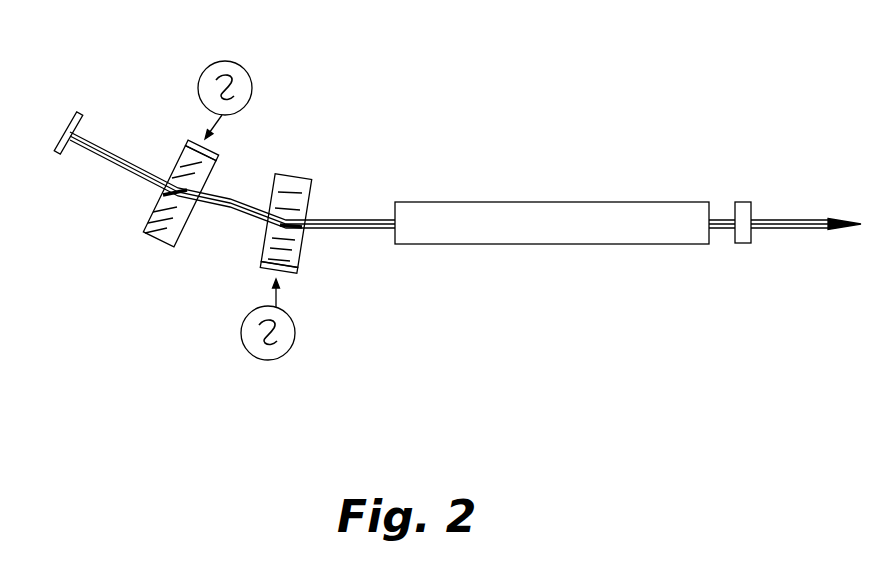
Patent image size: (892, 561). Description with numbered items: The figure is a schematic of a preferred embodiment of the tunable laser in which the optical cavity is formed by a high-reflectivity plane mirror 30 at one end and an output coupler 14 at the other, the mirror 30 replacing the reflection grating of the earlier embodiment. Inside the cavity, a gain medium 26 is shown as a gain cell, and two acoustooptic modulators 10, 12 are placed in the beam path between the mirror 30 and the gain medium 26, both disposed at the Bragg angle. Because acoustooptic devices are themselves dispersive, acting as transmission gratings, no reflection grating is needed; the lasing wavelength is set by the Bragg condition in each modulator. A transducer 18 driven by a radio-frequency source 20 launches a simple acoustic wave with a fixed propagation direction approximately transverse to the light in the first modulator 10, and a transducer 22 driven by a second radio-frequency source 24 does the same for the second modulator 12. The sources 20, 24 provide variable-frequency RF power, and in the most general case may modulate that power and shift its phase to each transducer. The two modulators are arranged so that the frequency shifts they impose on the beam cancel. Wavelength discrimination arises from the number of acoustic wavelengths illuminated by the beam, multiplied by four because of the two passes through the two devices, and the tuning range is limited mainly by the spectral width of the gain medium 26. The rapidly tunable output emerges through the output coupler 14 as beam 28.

The acoustooptic modulator 10 is at (313, 208).
The acoustooptic modulator 12 is at (171, 150).
The output coupler 14 is at (734, 240).
The transducer 18 is at (265, 281).
The RF generator 20 is at (293, 350).
The transducer 22 is at (218, 140).
The RF generator 24 is at (250, 73).
The gain medium 26 is at (494, 199).
The beam 28 is at (790, 220).
The high-reflectivity plane mirror 30 is at (57, 152).